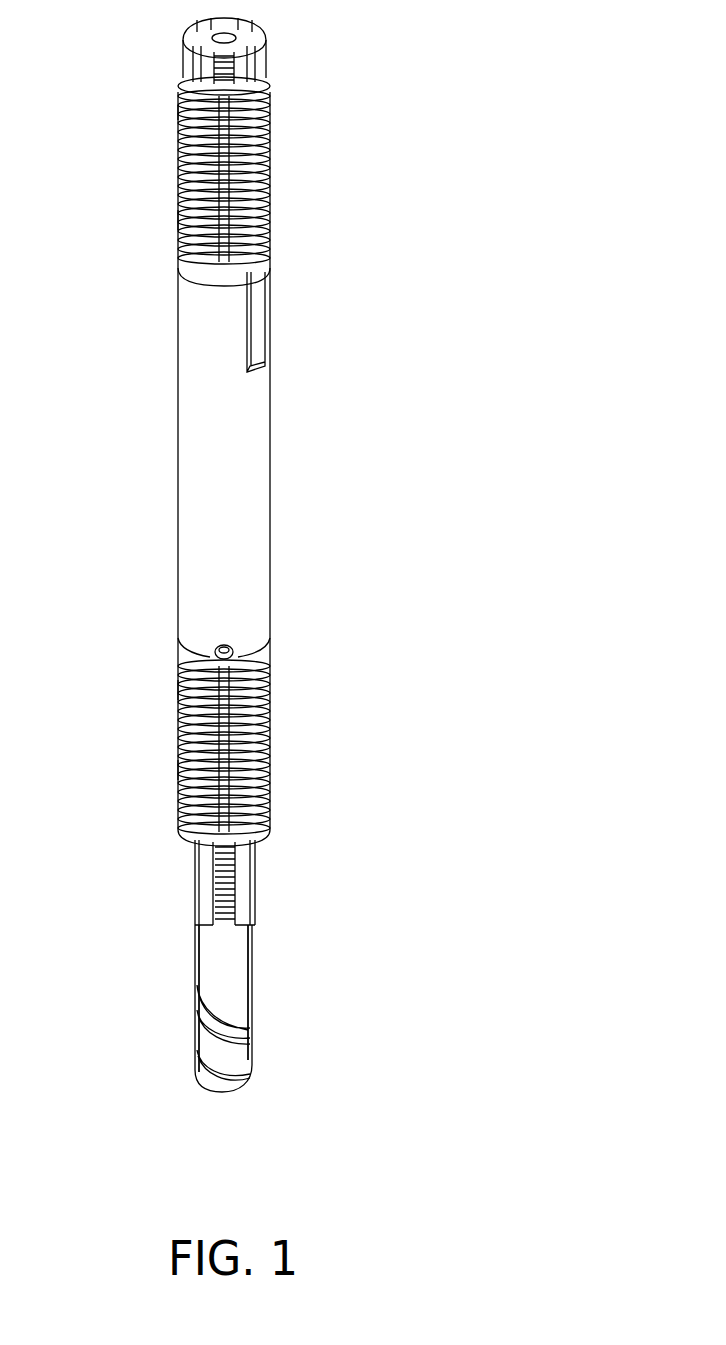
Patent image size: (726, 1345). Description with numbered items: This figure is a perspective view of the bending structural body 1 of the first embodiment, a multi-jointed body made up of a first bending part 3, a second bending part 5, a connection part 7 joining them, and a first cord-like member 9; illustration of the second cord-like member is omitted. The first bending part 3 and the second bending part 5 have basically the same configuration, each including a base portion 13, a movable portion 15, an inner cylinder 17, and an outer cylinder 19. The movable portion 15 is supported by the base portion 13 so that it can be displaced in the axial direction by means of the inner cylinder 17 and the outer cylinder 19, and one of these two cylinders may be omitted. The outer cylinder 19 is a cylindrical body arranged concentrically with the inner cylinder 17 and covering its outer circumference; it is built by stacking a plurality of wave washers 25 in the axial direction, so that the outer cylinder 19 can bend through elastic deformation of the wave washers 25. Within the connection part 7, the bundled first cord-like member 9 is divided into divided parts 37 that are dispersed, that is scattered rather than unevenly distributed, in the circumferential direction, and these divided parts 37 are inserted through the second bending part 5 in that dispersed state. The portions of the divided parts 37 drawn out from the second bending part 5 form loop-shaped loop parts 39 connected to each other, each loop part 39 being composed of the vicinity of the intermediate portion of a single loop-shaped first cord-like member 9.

The bending structural body 1 is at (403, 102).
The first bending part 3 is at (280, 210).
The second bending part 5 is at (280, 723).
The connection part 7 is at (286, 453).
The first cord-like member 9 is at (263, 983).
The base portion 13 is at (256, 862).
The movable portion 15 is at (187, 43).
The inner cylinder 17 is at (185, 88).
The outer cylinder 19 is at (178, 222).
The wave washer 25 is at (178, 146).
The divided part 37 is at (252, 950).
The loop part 39 is at (253, 1015).